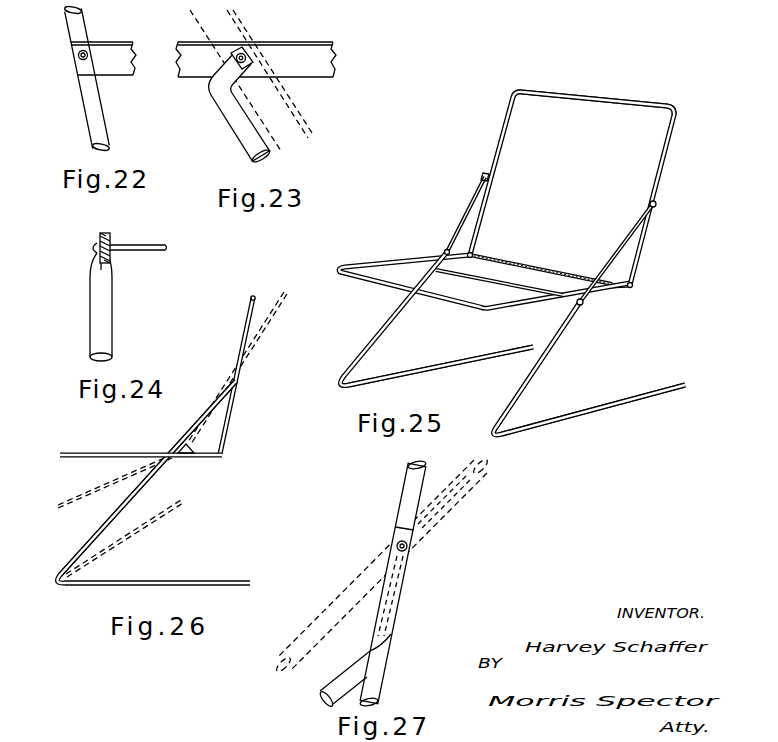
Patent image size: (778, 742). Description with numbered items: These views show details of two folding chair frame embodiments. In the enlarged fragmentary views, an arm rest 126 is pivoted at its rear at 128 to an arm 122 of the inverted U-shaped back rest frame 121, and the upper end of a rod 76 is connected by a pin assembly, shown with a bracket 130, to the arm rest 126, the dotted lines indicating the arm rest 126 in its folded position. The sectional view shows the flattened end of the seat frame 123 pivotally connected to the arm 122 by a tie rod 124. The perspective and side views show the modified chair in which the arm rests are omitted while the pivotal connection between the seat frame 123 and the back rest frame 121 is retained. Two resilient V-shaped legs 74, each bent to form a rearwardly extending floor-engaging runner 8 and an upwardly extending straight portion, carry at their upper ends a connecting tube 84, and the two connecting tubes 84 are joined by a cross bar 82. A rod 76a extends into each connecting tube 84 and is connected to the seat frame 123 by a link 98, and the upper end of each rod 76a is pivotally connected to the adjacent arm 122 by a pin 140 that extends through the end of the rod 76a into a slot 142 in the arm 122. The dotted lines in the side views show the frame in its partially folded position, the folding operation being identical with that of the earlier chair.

In FIG. 25, the floor-engaging runner 8 is at (570, 420).
In FIG. 26, the floor-engaging runner 8 is at (181, 578).
In FIG. 25, the V-shaped leg 74 is at (538, 375).
In FIG. 26, the V-shaped leg 74 is at (85, 543).
In FIG. 23, the arm of the back rest support 76 is at (245, 158).
In FIG. 25, the rod 76a is at (630, 238).
In FIG. 26, the rod 76a is at (212, 413).
In FIG. 27, the rod 76a is at (358, 648).
In FIG. 25, the cross bar 82 is at (498, 282).
In FIG. 25, the connecting tube 84 is at (589, 302).
In FIG. 25, the link 98 is at (457, 229).
In FIG. 25, the back rest frame 121 is at (606, 106).
In FIG. 22, the arm of the back rest frame 122 is at (82, 18).
In FIG. 24, the arm of the back rest frame 122 is at (111, 234).
In FIG. 25, the arm of the back rest frame 122 is at (672, 153).
In FIG. 26, the arm of the back rest frame 122 is at (248, 317).
In FIG. 27, the arm of the back rest frame 122 is at (403, 479).
In FIG. 24, the seat frame 123 is at (88, 338).
In FIG. 25, the seat frame 123 is at (428, 300).
In FIG. 26, the seat frame 123 is at (99, 452).
In FIG. 24, the tie rod 124 is at (136, 256).
In FIG. 25, the tie rod 124 is at (533, 268).
In FIG. 22, the arm rest 126 is at (118, 41).
In FIG. 23, the arm rest 126 is at (267, 41).
In FIG. 22, the pivot of the arm rest 128 is at (78, 54).
In FIG. 23, the bracket 130 is at (242, 49).
In FIG. 25, the pin 140 is at (657, 205).
In FIG. 27, the pin 140 is at (408, 549).
In FIG. 27, the slot 142 is at (466, 496).